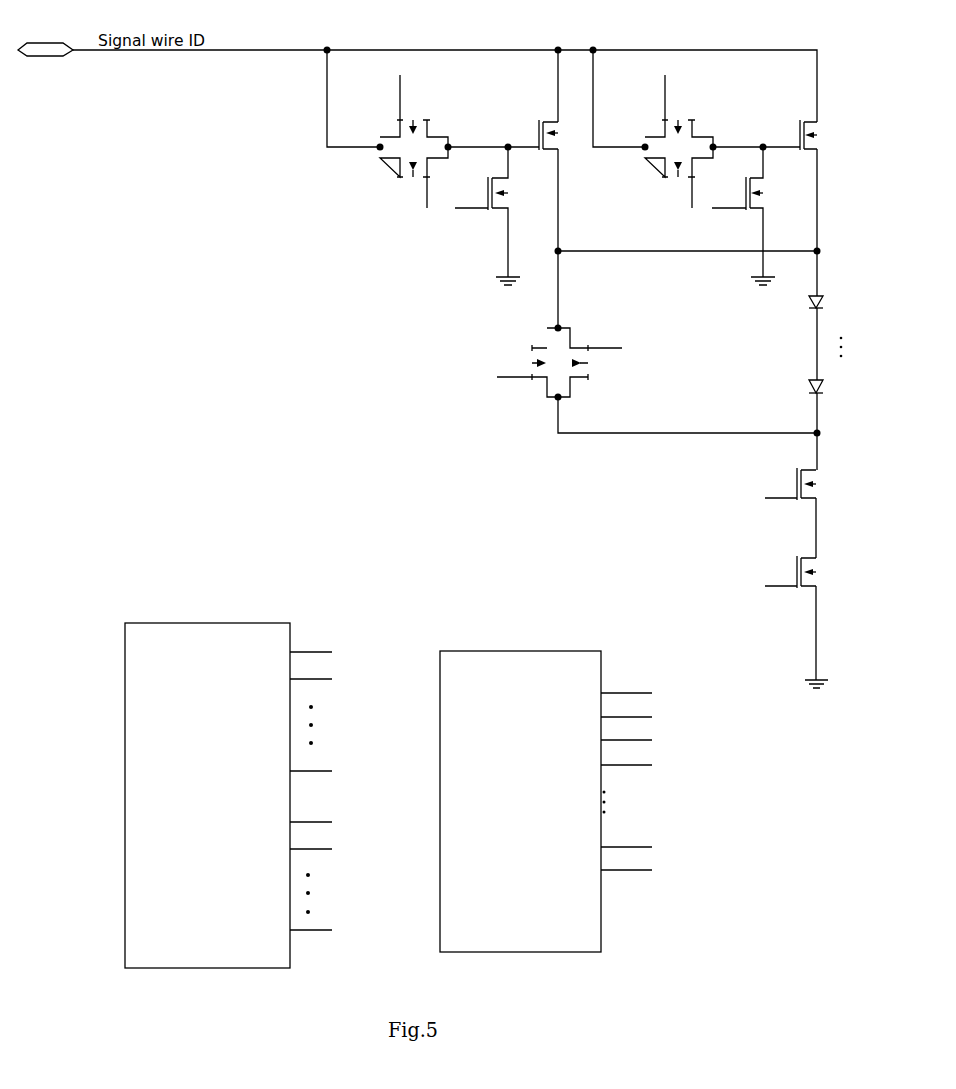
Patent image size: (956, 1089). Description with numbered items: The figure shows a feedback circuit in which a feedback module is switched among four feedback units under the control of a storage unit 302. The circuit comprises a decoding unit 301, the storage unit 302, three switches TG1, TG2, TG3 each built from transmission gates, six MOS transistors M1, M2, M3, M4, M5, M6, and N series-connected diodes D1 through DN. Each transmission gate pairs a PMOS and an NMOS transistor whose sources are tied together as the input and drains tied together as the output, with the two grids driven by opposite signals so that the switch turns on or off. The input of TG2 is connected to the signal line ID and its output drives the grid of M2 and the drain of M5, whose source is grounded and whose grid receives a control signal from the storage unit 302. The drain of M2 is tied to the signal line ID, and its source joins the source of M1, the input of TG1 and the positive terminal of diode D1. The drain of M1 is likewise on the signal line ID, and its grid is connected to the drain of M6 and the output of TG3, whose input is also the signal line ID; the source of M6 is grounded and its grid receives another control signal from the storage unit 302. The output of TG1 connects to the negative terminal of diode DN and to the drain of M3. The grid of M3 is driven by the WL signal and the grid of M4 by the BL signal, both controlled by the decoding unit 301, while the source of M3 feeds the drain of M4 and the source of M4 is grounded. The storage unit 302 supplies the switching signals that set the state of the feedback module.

The decoding unit 301 is at (228, 795).
The storage unit 302 is at (546, 801).
The transmission gate switch TG1 is at (616, 374).
The transmission gate switch TG2 is at (462, 152).
The transmission gate switch TG3 is at (725, 152).
The MOS transistor M1 is at (823, 185).
The MOS transistor M2 is at (562, 189).
The MOS transistor M3 is at (808, 513).
The MOS transistor M4 is at (808, 622).
The MOS transistor M5 is at (493, 216).
The MOS transistor M6 is at (751, 216).
The diode D1 is at (830, 295).
The diode DN is at (831, 386).